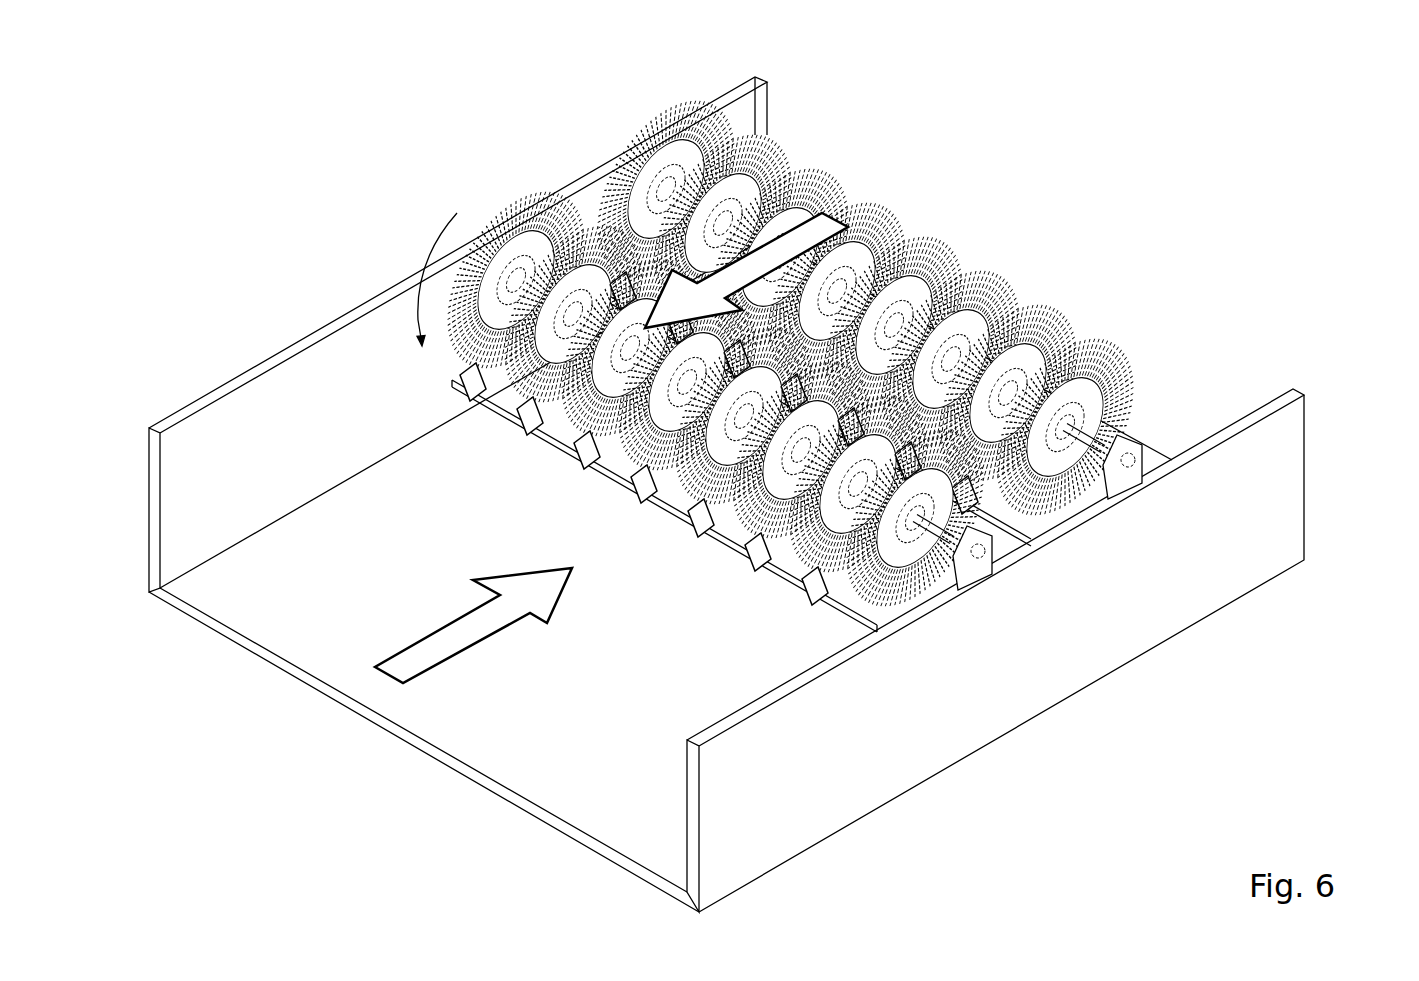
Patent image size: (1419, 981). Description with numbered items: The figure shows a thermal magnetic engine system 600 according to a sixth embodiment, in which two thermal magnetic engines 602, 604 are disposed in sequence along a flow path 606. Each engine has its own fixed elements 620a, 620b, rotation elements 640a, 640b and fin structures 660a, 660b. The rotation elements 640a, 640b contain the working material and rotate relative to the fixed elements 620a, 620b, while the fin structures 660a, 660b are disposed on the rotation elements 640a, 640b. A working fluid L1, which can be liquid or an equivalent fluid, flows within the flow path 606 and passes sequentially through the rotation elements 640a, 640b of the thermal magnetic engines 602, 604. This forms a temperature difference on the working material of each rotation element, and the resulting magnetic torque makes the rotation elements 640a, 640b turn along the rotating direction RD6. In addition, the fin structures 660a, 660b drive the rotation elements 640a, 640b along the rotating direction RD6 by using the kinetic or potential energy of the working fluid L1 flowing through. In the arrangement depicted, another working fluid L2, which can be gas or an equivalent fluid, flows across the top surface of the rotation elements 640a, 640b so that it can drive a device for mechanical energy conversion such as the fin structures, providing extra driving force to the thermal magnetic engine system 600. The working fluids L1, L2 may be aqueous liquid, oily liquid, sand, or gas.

The thermal magnetic engine system 600 is at (770, 465).
The thermal magnetic engine 602 is at (735, 512).
The thermal magnetic engine 604 is at (944, 308).
The flow path 606 is at (585, 782).
The fixed element 620a is at (978, 578).
The fixed element 620b is at (1117, 482).
The rotation element 640a is at (358, 364).
The rotation element 640b is at (724, 70).
The fin structure 660a is at (940, 577).
The fin structure 660b is at (1137, 375).
The working fluid L1 is at (425, 647).
The working fluid L2 is at (826, 210).
The rotating direction RD6 is at (430, 243).